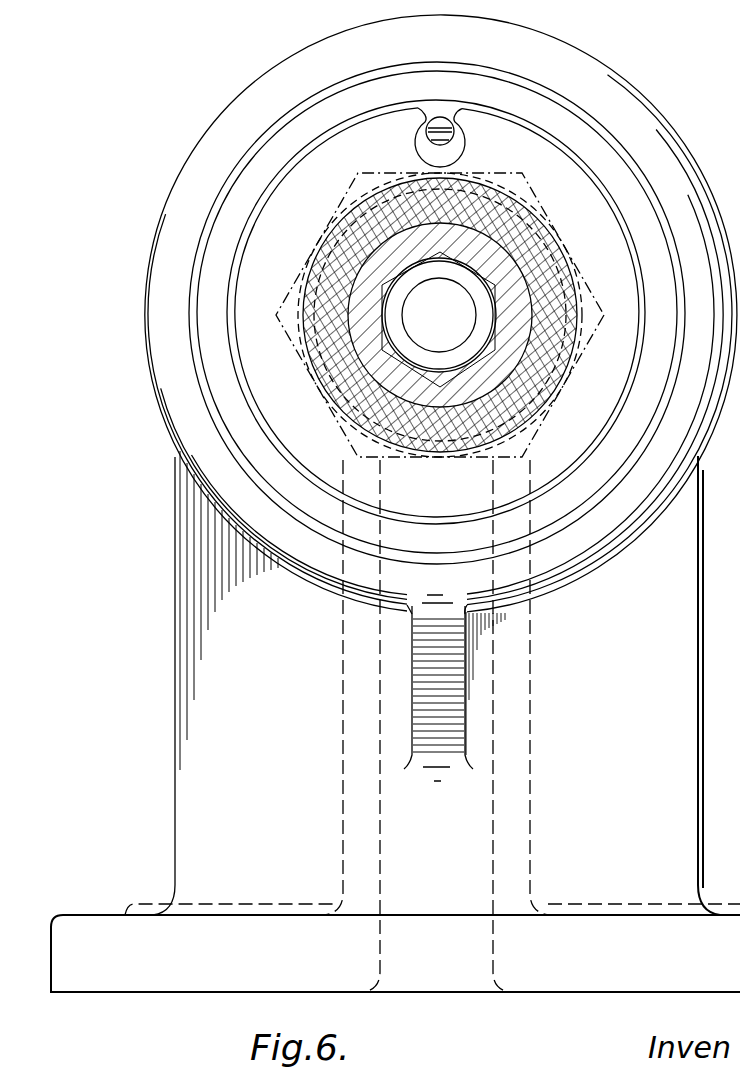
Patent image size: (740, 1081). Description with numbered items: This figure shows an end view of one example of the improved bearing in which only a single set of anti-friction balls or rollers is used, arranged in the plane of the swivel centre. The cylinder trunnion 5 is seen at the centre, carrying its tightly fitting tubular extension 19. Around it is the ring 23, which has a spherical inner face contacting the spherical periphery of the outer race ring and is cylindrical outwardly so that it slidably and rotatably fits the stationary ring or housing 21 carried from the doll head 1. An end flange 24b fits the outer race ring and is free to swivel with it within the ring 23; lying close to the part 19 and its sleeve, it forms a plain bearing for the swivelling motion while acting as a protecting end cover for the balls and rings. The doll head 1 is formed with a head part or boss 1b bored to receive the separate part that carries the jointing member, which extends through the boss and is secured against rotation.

The doll head 1 is at (338, 681).
The head part or boss 1b is at (541, 213).
The cylinder trunnion 5 is at (388, 368).
The tubular extension of the cylinder trunnion 19 is at (523, 389).
The stationary ring or housing 21 is at (250, 88).
The ring 23 is at (574, 137).
The end flange 24b is at (408, 137).